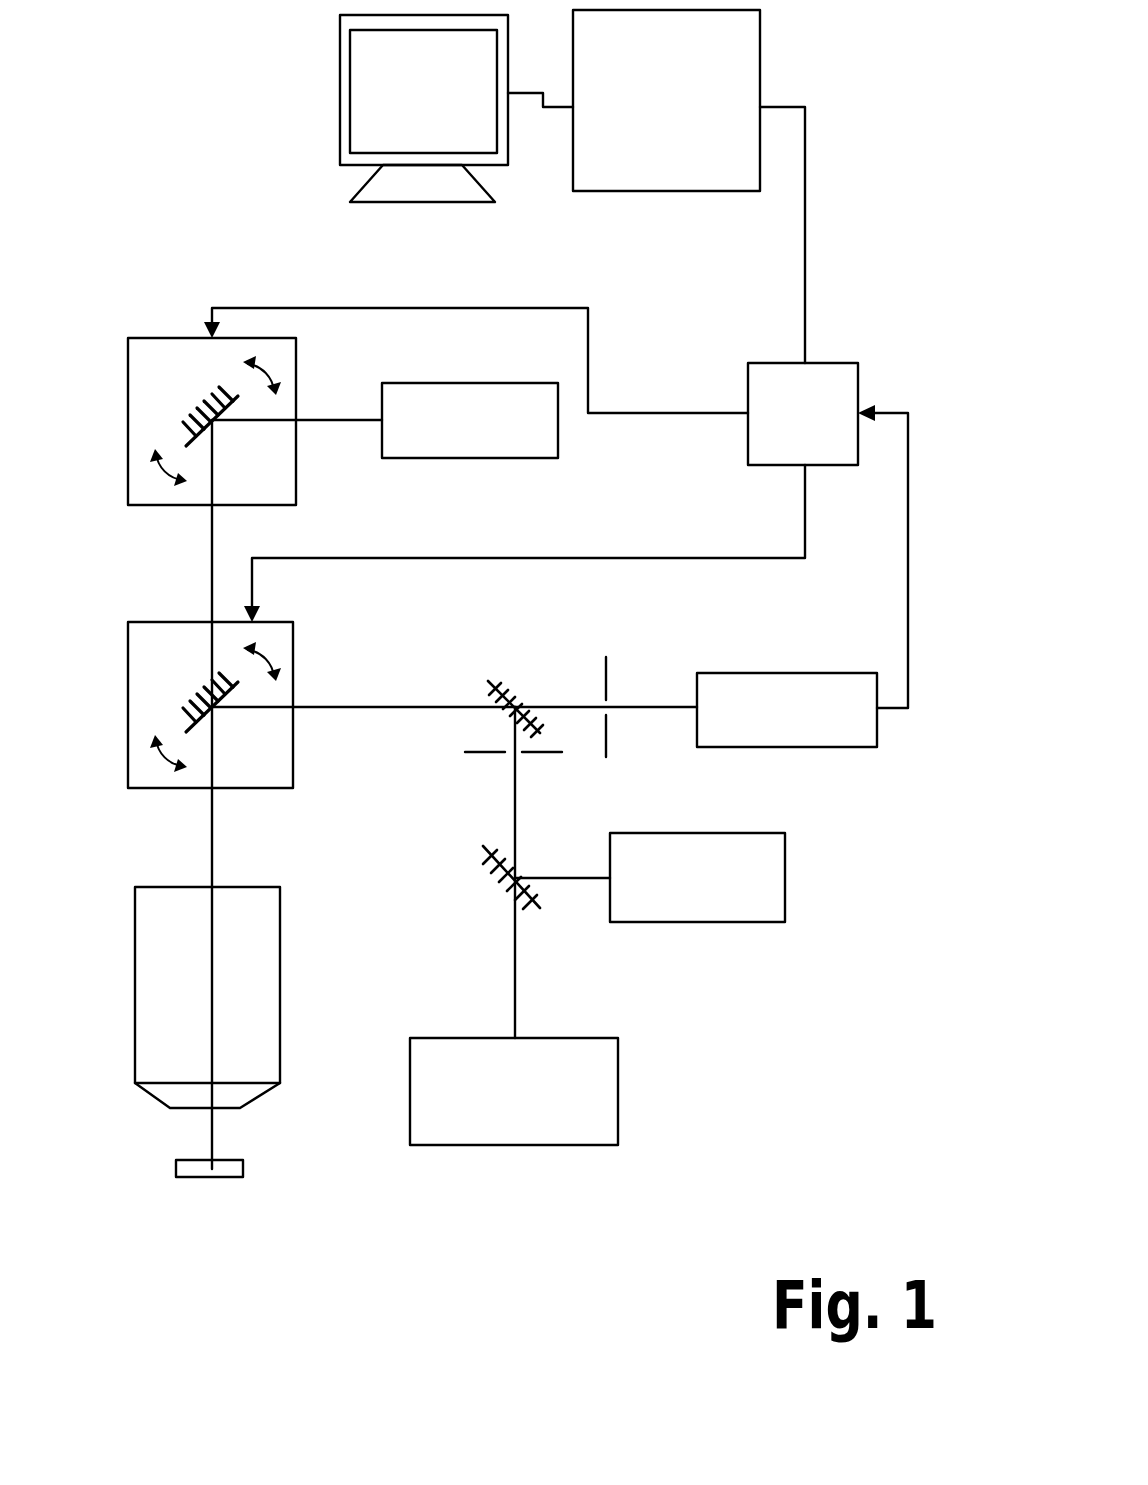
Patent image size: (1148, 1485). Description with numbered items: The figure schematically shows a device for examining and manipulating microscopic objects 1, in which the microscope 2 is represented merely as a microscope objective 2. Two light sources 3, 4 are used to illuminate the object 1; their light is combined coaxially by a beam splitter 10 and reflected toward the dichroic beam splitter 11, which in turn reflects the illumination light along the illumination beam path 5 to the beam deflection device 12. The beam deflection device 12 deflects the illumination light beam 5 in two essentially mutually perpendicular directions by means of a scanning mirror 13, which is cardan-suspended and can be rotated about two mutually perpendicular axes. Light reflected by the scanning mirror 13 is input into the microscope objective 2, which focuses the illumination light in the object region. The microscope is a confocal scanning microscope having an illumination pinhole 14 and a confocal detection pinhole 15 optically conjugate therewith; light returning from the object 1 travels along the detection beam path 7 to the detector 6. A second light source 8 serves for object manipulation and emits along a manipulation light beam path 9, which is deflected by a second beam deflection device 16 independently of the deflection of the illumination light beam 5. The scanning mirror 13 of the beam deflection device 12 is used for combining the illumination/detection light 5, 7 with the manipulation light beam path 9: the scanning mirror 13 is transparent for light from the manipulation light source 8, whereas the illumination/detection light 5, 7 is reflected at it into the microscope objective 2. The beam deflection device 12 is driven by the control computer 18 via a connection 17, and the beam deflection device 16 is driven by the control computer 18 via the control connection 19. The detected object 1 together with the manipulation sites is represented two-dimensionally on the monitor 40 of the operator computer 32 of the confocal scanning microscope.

The microscopic object 1 is at (229, 1179).
The microscope objective 2 is at (255, 971).
The light source 3 is at (735, 922).
The light source 4 is at (618, 1090).
The illumination beam path 5 is at (513, 785).
The detector 6 is at (788, 673).
The detection beam path 7 is at (587, 707).
The second light source 8 is at (535, 460).
The manipulation light beam path 9 is at (212, 542).
The beam splitter 10 is at (484, 857).
The dichroic beam splitter 11 is at (543, 725).
The beam deflection device 12 is at (175, 662).
The scanning mirror 13 is at (200, 737).
The illumination pinhole 14 is at (537, 754).
The confocal detection pinhole 15 is at (607, 738).
The beam deflection device 16 is at (160, 362).
The connection 17 is at (578, 560).
The control computer 18 is at (778, 363).
The control connection 19 is at (480, 308).
The operator computer 32 is at (760, 57).
The monitor 40 is at (340, 87).